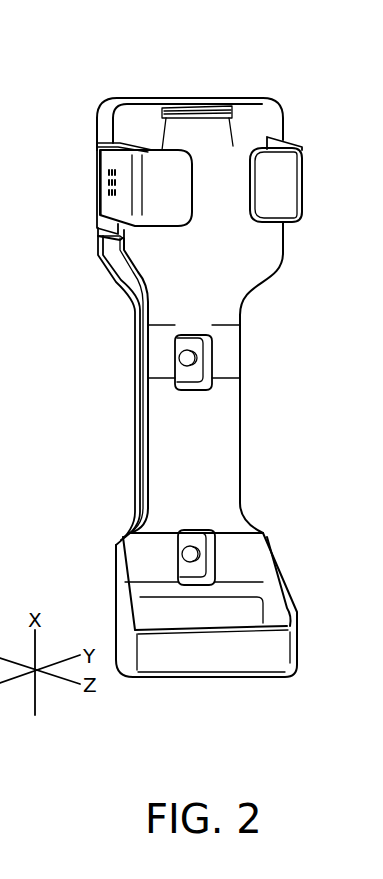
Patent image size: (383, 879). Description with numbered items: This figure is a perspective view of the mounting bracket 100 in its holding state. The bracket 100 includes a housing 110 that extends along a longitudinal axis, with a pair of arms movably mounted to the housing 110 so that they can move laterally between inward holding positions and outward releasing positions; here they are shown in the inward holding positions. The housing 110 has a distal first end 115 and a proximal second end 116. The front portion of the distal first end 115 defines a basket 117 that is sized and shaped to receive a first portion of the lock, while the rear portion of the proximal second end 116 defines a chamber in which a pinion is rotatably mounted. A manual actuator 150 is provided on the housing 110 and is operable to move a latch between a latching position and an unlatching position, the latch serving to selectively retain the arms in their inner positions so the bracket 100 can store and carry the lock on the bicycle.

The mounting bracket 100 is at (160, 84).
The housing 110 is at (241, 312).
The distal first end 115 is at (82, 583).
The proximal second end 116 is at (93, 235).
The basket 117 is at (290, 577).
The manual actuator 150 is at (97, 268).